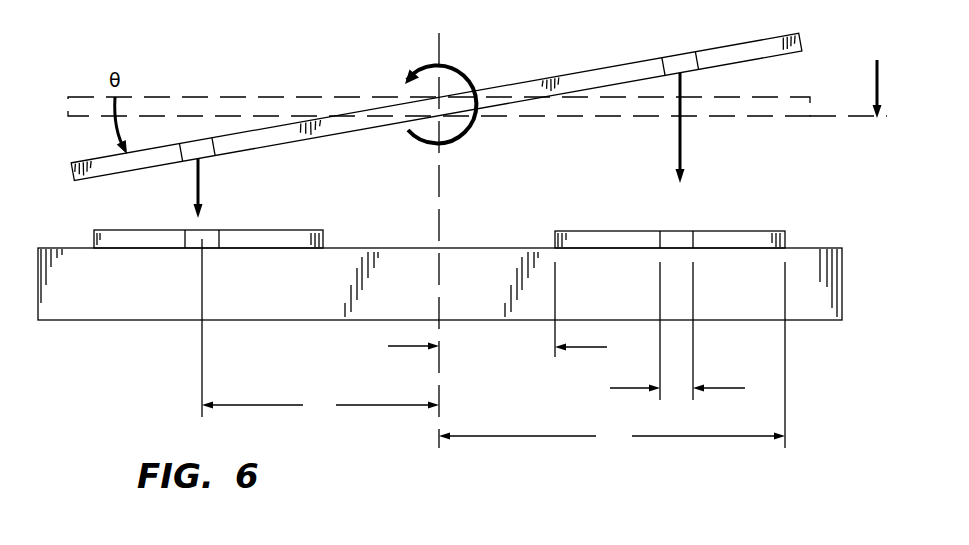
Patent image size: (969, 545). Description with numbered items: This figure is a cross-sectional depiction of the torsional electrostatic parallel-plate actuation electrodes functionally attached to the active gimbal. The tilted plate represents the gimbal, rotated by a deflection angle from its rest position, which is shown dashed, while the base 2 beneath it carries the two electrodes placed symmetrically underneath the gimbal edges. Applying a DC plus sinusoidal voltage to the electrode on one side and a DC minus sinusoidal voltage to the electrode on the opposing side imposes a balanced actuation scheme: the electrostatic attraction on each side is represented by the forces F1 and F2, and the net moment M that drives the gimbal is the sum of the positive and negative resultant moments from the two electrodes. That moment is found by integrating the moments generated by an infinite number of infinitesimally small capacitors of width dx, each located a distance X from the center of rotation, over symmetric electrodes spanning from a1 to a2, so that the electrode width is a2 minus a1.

The base 2 is at (440, 284).
The first force F1 is at (215, 188).
The second force F2 is at (698, 128).
The moment M is at (428, 96).
The distance from the center of rotation X is at (320, 405).
The electrode inner edge distance a1 is at (399, 347).
The electrode outer edge distance a2 is at (612, 438).
The infinitesimal capacitor width dx is at (663, 388).